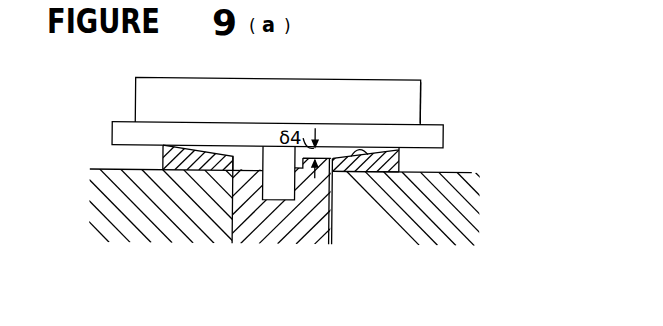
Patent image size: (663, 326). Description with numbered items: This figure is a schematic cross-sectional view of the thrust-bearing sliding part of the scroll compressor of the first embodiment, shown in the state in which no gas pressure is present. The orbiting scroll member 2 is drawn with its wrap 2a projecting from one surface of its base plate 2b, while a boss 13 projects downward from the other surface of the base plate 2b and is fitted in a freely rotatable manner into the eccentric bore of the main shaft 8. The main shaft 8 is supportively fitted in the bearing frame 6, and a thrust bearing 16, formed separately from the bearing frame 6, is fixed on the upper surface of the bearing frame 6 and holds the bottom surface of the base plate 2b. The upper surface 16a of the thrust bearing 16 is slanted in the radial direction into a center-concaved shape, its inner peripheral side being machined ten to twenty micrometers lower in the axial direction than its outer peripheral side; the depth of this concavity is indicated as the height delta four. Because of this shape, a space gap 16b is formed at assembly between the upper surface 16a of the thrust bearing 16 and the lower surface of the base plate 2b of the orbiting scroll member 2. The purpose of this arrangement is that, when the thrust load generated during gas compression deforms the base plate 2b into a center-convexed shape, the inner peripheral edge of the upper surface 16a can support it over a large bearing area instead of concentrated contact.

The orbiting scroll member 2 is at (380, 93).
The wrap 2a is at (415, 105).
The base plate 2b is at (436, 138).
The bearing frame 6 is at (443, 218).
The main shaft 8 is at (301, 218).
The boss 13 is at (282, 182).
The thrust bearing 16 is at (392, 163).
The upper surface of the thrust bearing 16a is at (376, 153).
The space gap 16b is at (345, 156).